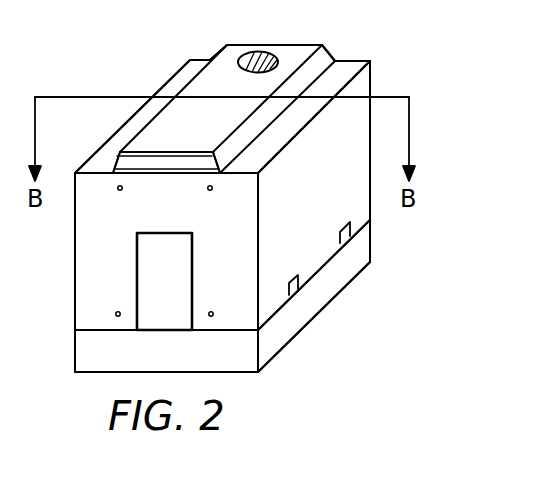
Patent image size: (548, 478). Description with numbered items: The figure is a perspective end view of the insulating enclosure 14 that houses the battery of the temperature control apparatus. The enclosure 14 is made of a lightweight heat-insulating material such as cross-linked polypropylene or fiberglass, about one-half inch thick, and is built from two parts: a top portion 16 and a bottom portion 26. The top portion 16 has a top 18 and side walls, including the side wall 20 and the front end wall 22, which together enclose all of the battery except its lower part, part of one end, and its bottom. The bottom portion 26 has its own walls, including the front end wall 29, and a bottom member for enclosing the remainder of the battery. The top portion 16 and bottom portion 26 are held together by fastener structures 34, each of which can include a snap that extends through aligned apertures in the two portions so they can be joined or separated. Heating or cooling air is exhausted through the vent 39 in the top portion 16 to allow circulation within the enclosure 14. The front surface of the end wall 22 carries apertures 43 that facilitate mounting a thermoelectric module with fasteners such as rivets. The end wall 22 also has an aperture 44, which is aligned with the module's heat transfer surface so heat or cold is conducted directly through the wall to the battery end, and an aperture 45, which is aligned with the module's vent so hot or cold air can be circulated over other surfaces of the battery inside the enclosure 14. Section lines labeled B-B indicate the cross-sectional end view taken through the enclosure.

The insulating enclosure 14 is at (424, 222).
The top portion 16 is at (372, 80).
The top 18 is at (222, 66).
The side wall 20 is at (329, 202).
The end wall 22 is at (191, 207).
The bottom portion 26 is at (268, 338).
The end wall 29 is at (243, 367).
The fastener structures 34 is at (348, 238).
The vent 39 is at (256, 54).
The apertures 43 is at (122, 190).
The aperture 44 is at (180, 282).
The aperture 45 is at (128, 165).